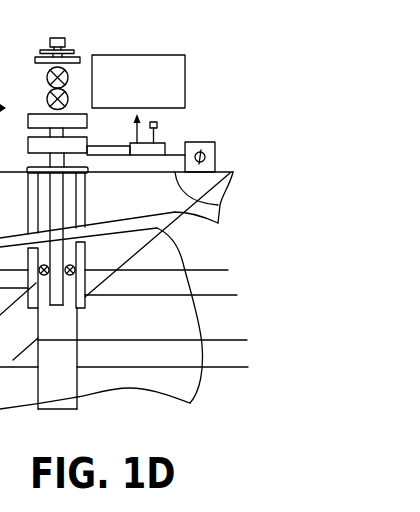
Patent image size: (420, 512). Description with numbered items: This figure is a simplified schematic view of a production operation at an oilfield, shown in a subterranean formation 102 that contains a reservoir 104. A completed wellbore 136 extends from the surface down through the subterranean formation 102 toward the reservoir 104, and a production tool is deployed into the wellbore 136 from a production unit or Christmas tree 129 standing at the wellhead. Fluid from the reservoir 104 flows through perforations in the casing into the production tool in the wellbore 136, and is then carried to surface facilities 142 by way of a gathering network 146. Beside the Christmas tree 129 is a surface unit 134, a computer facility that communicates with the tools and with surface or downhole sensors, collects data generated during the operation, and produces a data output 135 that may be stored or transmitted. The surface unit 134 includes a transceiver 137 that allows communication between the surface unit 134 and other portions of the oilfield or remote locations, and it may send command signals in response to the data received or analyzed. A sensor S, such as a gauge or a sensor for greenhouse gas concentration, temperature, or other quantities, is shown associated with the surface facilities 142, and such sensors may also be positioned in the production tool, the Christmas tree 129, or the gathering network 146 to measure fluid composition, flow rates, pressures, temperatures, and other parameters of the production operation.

The subterranean formation 102 is at (132, 244).
The reservoir 104 is at (167, 327).
The Christmas tree 129 is at (70, 37).
The surface unit 134 is at (132, 119).
The data output 135 is at (185, 82).
The wellbore 136 is at (63, 206).
The transceiver 137 is at (158, 127).
The surface facilities 142 is at (215, 153).
The gathering network 146 is at (220, 207).
The sensor S is at (203, 143).